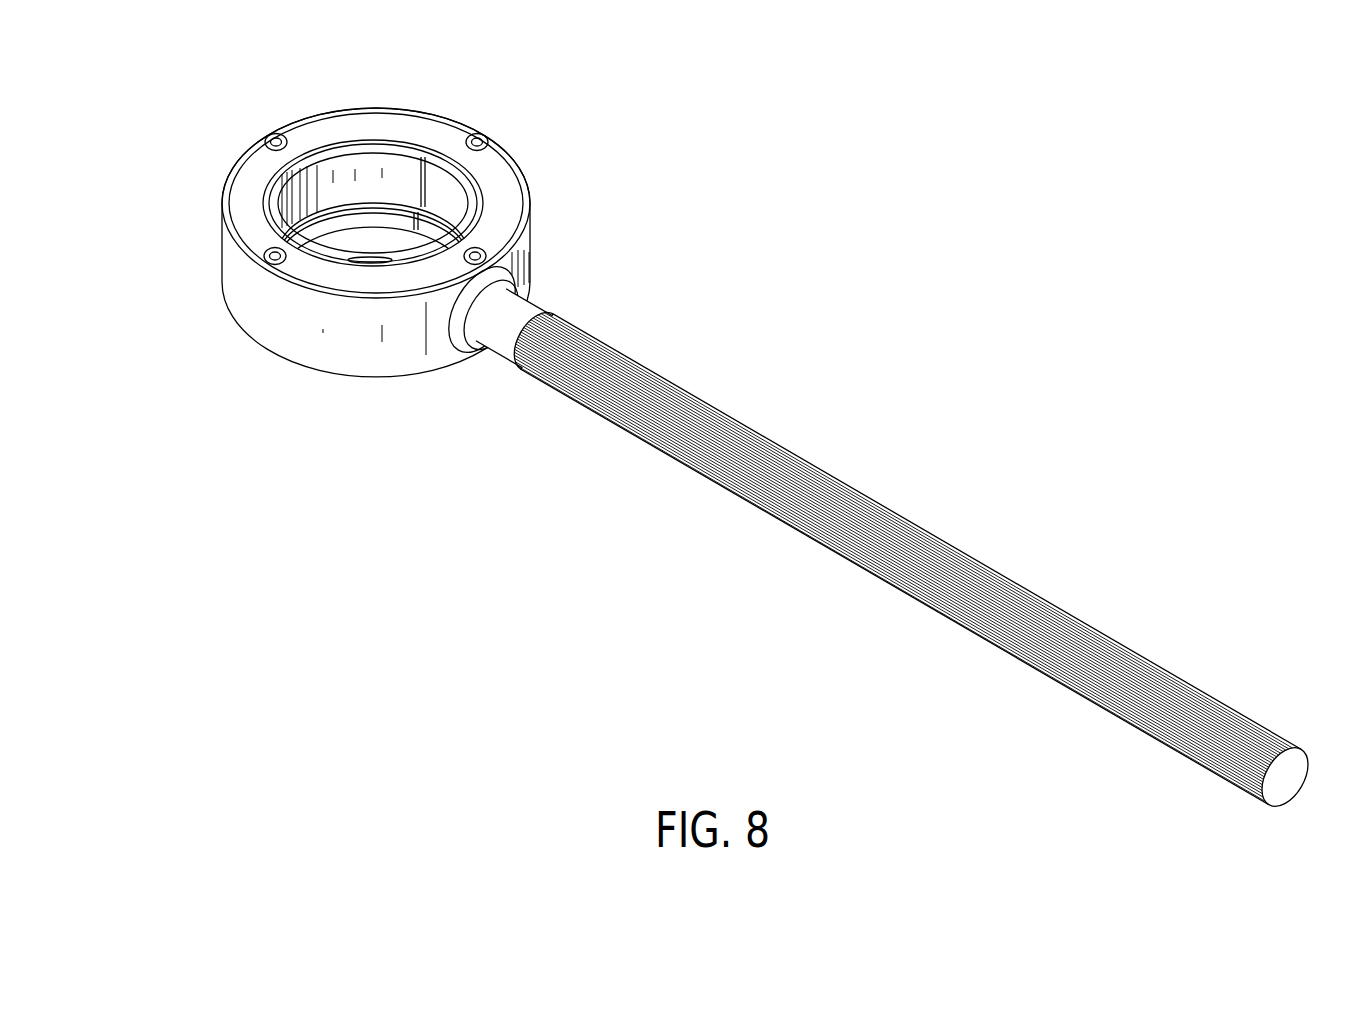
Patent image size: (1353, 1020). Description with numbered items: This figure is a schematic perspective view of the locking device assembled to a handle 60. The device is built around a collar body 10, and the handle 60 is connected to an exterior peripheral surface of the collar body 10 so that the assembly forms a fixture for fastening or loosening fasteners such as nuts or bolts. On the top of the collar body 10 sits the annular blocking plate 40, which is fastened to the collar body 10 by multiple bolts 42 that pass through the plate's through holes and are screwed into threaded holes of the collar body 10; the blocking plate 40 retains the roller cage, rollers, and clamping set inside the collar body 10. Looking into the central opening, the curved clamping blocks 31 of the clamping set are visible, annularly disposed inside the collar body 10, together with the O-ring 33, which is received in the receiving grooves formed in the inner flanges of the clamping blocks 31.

The collar body 10 is at (248, 357).
The clamping block 31 is at (388, 158).
The O-ring 33 is at (432, 213).
The blocking plate 40 is at (226, 186).
The bolt 42 is at (272, 132).
The handle 60 is at (925, 450).